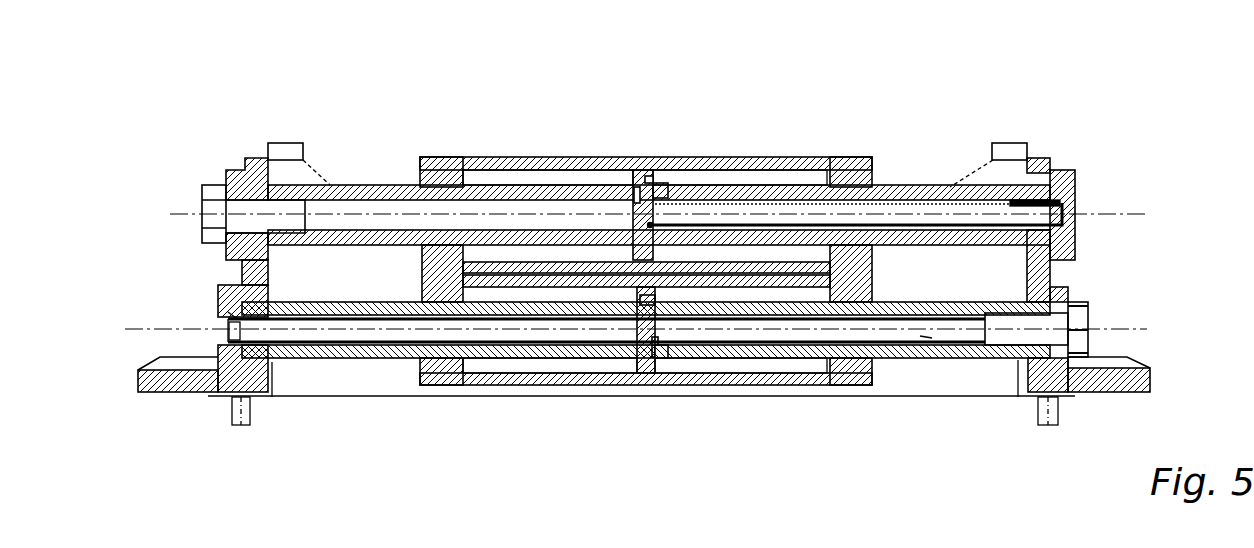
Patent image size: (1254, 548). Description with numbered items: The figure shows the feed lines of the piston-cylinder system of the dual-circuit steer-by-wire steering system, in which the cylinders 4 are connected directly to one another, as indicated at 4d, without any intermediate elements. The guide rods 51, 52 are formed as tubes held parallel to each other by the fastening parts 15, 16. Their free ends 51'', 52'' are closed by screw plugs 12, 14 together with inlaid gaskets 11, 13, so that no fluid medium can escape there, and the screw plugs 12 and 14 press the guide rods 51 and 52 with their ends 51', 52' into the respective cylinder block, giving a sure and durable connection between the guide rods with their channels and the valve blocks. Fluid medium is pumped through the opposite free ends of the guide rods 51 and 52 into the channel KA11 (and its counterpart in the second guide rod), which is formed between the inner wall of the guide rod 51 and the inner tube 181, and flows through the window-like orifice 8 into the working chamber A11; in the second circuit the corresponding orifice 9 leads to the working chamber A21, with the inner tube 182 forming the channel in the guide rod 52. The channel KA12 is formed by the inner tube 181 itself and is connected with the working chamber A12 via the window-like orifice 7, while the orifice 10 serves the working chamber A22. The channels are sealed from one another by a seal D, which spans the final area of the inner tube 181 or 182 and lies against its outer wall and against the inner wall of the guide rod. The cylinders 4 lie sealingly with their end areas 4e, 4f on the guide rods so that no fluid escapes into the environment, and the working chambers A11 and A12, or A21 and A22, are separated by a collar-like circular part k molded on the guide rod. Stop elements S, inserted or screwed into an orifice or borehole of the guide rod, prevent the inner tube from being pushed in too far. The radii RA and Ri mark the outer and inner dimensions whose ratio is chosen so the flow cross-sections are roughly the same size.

The cylinders 4 is at (502, 160).
The direct cylinder connection 4d is at (430, 273).
The cylinder end area 4e is at (442, 185).
The cylinder end area 4f is at (852, 180).
The guide rod 51 is at (659, 165).
The free end of guide rod 51' is at (1067, 201).
The free end of guide rod 51'' is at (276, 171).
The guide rod 52 is at (646, 390).
The free end of guide rod 52' is at (180, 328).
The free end of guide rod 52'' is at (1038, 356).
The window-like orifice 7 is at (647, 223).
The window-like orifice 8 is at (670, 192).
The window-like orifice 9 is at (617, 295).
The window-like orifice 10 is at (682, 340).
The inlaid gasket 11 is at (306, 205).
The screw plug 12 is at (215, 196).
The inlaid gasket 13 is at (990, 335).
The screw plug 14 is at (1077, 317).
The fastening part 15 is at (1090, 378).
The fastening part 16 is at (207, 395).
The inner tube 181 is at (1013, 213).
The inner tube 182 is at (262, 332).
The working chamber A11 is at (755, 180).
The working chamber A12 is at (545, 178).
The working chamber A21 is at (497, 368).
The working chamber A22 is at (733, 365).
The channel KA11 is at (928, 200).
The channel KA12 is at (987, 213).
The seal D is at (636, 187).
The circular part k is at (660, 183).
The stop element S is at (633, 215).
The outer radius RA is at (234, 316).
The inner radius Ri is at (927, 338).